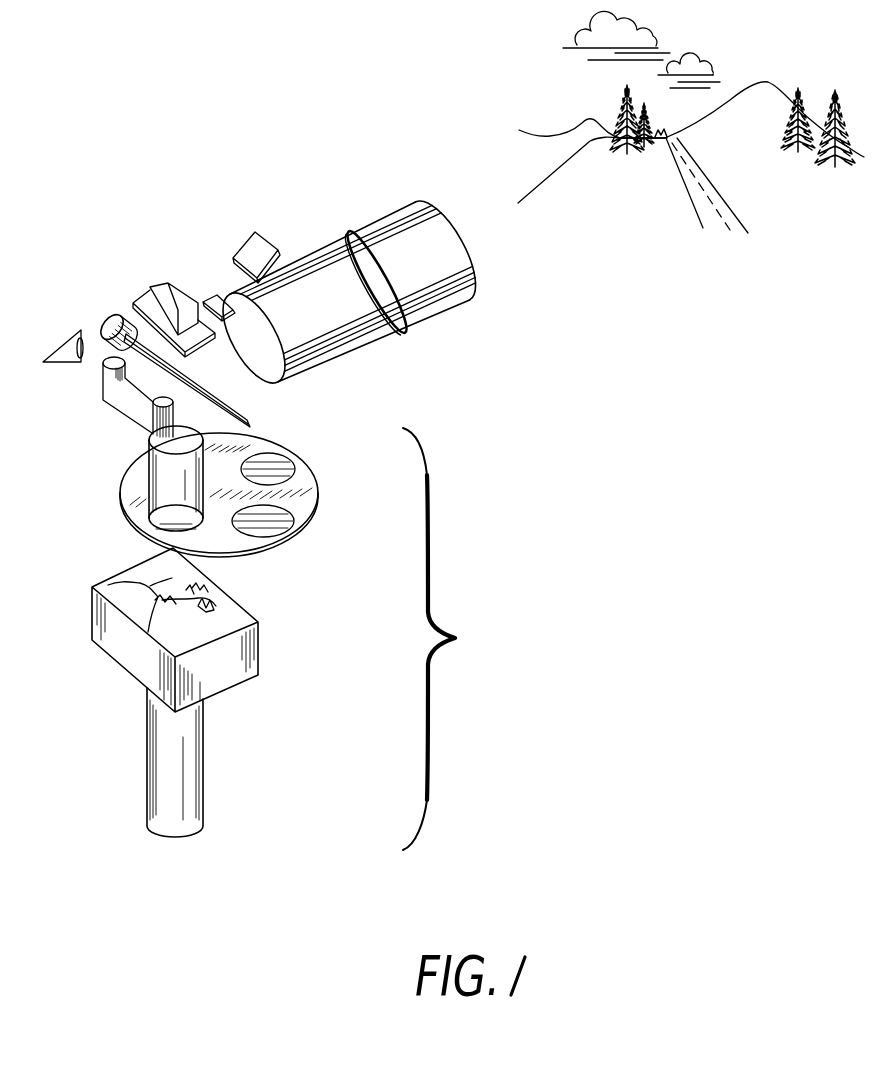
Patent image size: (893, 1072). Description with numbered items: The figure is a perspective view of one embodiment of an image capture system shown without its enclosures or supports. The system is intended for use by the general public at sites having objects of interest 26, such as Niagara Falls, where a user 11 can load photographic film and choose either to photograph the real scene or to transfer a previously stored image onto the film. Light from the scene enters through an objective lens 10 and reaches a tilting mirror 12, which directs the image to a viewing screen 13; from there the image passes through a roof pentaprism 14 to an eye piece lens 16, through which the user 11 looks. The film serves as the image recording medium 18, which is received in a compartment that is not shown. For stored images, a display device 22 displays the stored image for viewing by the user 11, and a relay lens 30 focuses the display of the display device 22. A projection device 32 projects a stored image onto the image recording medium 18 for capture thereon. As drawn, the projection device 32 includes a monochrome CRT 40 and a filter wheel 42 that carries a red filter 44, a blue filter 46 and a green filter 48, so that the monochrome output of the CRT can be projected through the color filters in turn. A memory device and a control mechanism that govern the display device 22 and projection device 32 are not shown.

The objective lens 10 is at (365, 345).
The user 11 is at (60, 372).
The tilting mirror 12 is at (237, 405).
The viewing screen 13 is at (113, 312).
The roof pentaprism 14 is at (158, 283).
The eye piece lens 16 is at (63, 330).
The image recording medium 18 is at (120, 408).
The display device 22 is at (258, 235).
The object of interest 26 is at (633, 230).
The relay lens 30 is at (207, 295).
The projection device 32 is at (448, 639).
The monochrome CRT 40 is at (250, 610).
The filter wheel 42 is at (318, 492).
The red filter 44 is at (273, 457).
The blue filter 46 is at (275, 523).
The green filter 48 is at (148, 530).